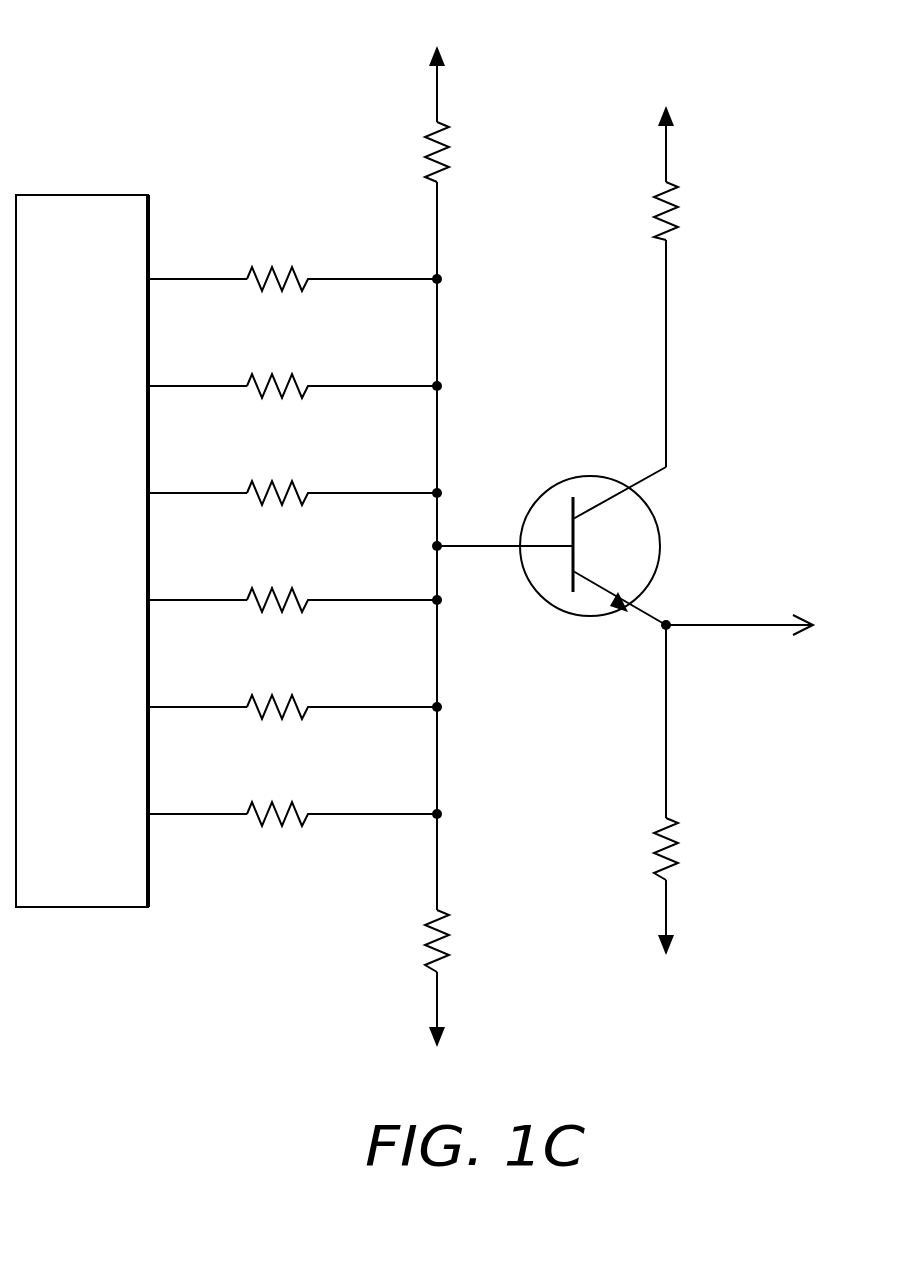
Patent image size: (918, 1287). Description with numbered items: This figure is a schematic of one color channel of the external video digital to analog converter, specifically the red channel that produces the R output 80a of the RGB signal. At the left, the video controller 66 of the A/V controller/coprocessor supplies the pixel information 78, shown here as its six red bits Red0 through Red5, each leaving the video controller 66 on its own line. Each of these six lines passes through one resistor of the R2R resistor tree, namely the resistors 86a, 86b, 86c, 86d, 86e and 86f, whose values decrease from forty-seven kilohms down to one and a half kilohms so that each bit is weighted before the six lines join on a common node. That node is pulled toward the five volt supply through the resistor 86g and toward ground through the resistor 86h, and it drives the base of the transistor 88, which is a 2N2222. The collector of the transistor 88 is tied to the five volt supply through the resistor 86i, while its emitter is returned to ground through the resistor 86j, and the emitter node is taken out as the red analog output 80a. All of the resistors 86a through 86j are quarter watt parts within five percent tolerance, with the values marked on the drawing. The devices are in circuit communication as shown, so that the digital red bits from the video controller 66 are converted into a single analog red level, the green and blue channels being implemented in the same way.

The video controller 66 is at (72, 908).
The pixel information 78 is at (165, 279).
The resistor 86a is at (290, 269).
The resistor 86b is at (290, 376).
The resistor 86c is at (290, 483).
The resistor 86d is at (290, 590).
The resistor 86e is at (290, 697).
The resistor 86f is at (290, 804).
The resistor 86g is at (431, 152).
The resistor 86h is at (433, 970).
The resistor 86i is at (656, 237).
The resistor 86j is at (660, 858).
The transistor 88 is at (587, 477).
The R channel of RGB signal 80a is at (713, 627).